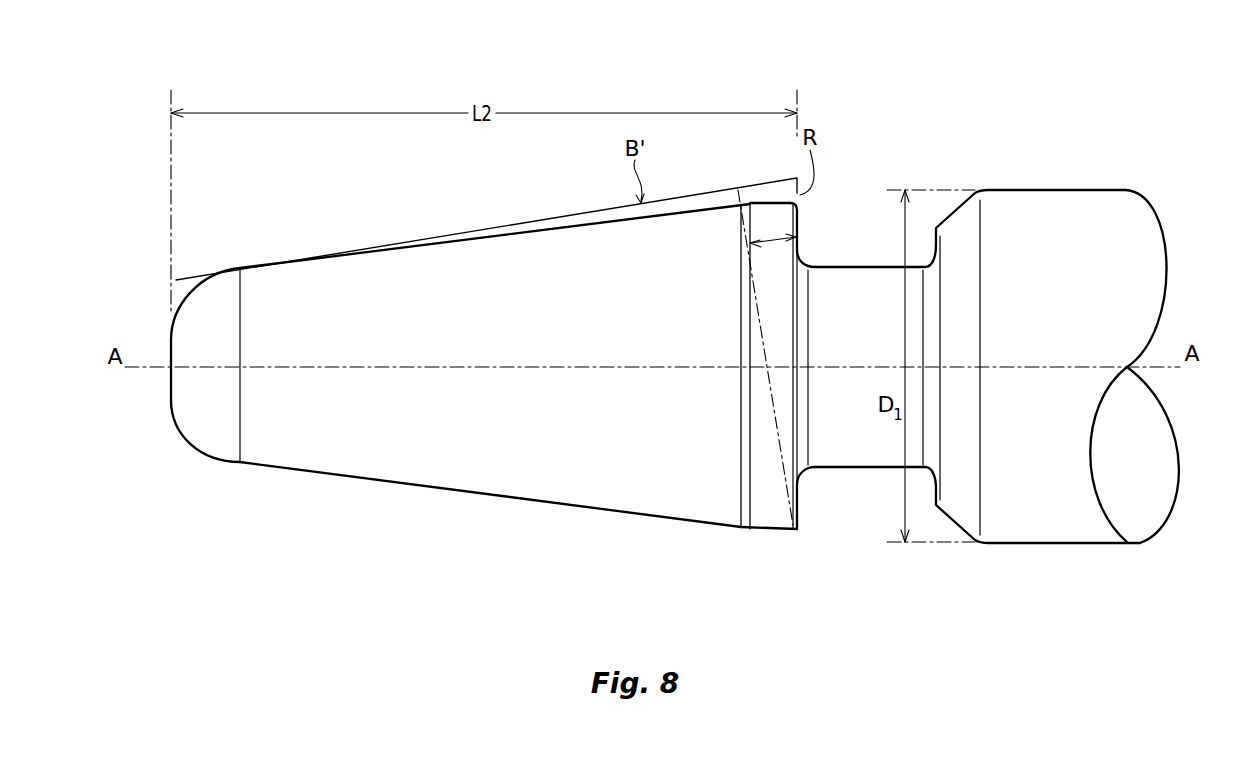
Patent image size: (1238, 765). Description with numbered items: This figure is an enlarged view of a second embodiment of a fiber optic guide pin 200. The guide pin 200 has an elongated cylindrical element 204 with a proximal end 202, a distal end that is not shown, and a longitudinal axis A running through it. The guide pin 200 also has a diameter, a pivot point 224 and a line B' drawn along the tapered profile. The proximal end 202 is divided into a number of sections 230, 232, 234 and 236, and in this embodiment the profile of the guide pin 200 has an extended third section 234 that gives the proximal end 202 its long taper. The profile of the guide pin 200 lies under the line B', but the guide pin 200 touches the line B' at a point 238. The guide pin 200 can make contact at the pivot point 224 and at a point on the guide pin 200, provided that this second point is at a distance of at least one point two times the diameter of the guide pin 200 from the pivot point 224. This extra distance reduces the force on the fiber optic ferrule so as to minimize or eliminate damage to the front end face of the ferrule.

The guide pin 200 is at (1021, 127).
The proximal end 202 is at (498, 395).
The elongated cylindrical element 204 is at (1108, 190).
The pivot point 224 is at (798, 526).
The first section 230 is at (769, 522).
The second section 232 is at (745, 526).
The third section 234 is at (497, 498).
The fourth section 236 is at (222, 447).
The contact point 238 is at (241, 254).